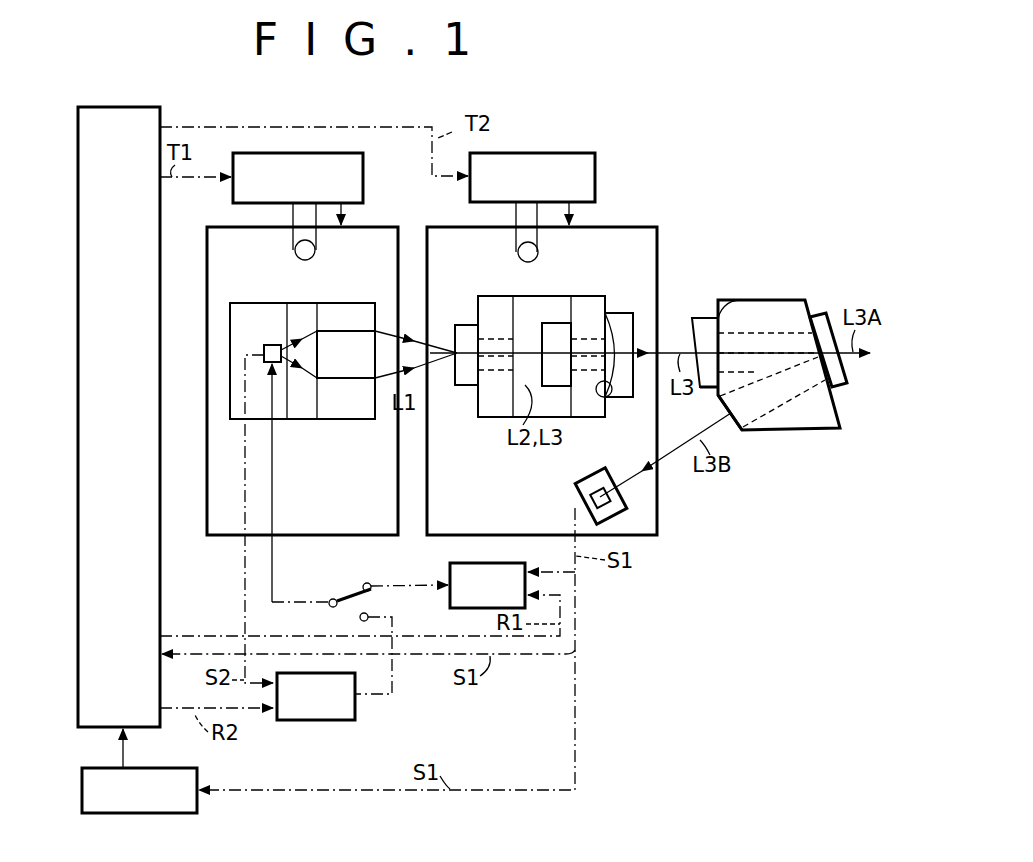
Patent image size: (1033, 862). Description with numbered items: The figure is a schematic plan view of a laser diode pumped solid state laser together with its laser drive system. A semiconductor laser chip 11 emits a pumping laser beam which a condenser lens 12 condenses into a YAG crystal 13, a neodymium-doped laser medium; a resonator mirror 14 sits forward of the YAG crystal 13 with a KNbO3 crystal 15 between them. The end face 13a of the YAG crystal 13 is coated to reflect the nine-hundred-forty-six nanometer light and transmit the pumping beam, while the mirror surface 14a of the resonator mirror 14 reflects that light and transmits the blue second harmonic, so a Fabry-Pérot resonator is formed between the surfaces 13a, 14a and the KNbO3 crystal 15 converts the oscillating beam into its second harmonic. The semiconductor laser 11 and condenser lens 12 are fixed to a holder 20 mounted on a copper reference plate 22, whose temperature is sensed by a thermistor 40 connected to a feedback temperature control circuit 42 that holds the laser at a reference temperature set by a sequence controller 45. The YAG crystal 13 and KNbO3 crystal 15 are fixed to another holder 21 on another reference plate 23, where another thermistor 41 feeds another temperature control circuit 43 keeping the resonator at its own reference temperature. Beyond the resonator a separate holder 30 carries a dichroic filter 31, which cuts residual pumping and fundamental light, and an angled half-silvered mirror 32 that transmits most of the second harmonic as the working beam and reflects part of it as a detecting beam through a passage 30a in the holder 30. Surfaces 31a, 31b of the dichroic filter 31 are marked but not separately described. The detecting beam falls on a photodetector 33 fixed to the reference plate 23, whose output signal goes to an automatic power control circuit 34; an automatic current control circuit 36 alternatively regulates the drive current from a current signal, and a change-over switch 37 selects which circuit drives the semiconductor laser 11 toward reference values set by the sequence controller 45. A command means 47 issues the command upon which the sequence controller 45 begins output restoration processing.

The semiconductor laser chip 11 is at (265, 347).
The condenser lens 12 is at (350, 331).
The YAG crystal 13 is at (462, 322).
The end face 13a is at (463, 386).
The resonator mirror 14 is at (623, 310).
The mirror surface 14a is at (606, 396).
The KNbO3 crystal 15 is at (555, 325).
The holder 20 is at (240, 303).
The holder 21 is at (520, 296).
The reference plate 22 is at (245, 552).
The reference plate 23 is at (657, 506).
The holder 30 is at (728, 290).
The passage 30a is at (772, 394).
The dichroic filter 31 is at (700, 390).
The lens surface 31a is at (696, 318).
The prism corner surface 31b is at (735, 300).
The half-silvered mirror 32 is at (818, 313).
The photodetector 33 is at (575, 490).
The automatic power control circuit 34 is at (450, 568).
The automatic current control circuit 36 is at (318, 720).
The change-over switch 37 is at (350, 590).
The thermistor 40 is at (316, 251).
The thermistor 41 is at (538, 252).
The temperature control circuit 42 is at (363, 160).
The temperature control circuit 43 is at (595, 153).
The sequence controller 45 is at (160, 598).
The command means 47 is at (140, 768).